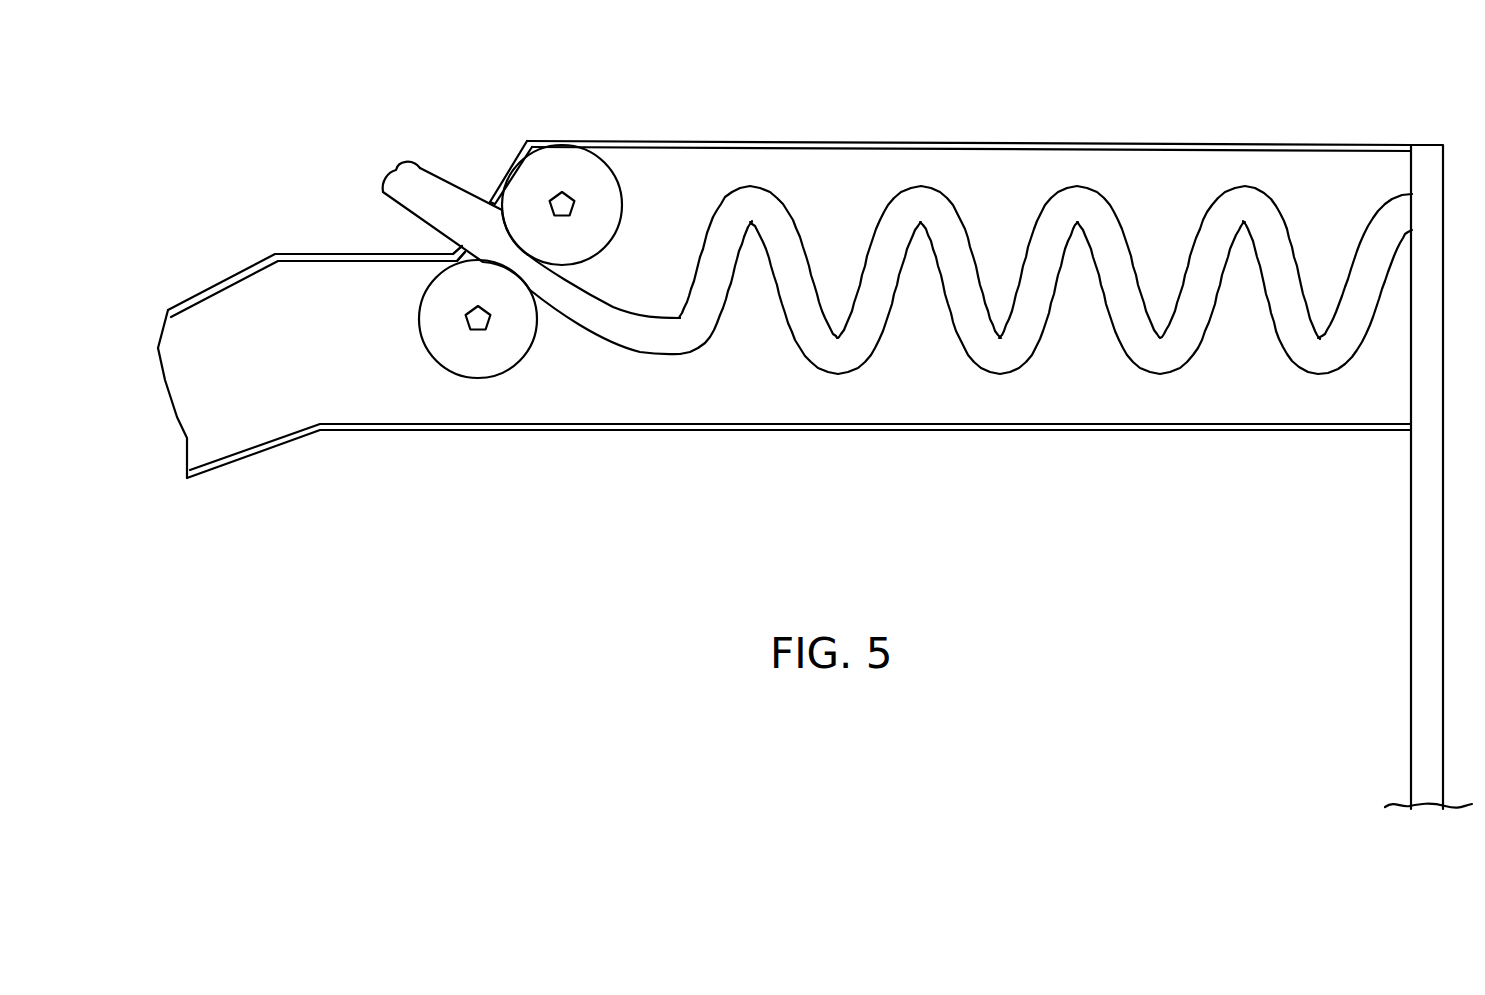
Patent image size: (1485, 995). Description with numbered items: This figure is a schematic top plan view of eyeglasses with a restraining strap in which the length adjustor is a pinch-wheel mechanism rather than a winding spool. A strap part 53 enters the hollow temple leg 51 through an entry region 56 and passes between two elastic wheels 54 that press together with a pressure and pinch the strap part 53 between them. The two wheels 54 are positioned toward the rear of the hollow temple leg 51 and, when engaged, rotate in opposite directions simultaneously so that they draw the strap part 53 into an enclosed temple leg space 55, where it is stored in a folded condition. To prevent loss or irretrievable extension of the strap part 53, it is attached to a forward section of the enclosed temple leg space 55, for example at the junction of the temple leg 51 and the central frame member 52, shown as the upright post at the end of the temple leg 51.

The hollow temple leg 51 is at (751, 442).
The central frame member 52 is at (1412, 665).
The strap part 53 is at (442, 162).
The elastic wheels 54 is at (612, 205).
The enclosed temple leg space 55 is at (1176, 199).
The inlet gap 56 is at (432, 240).